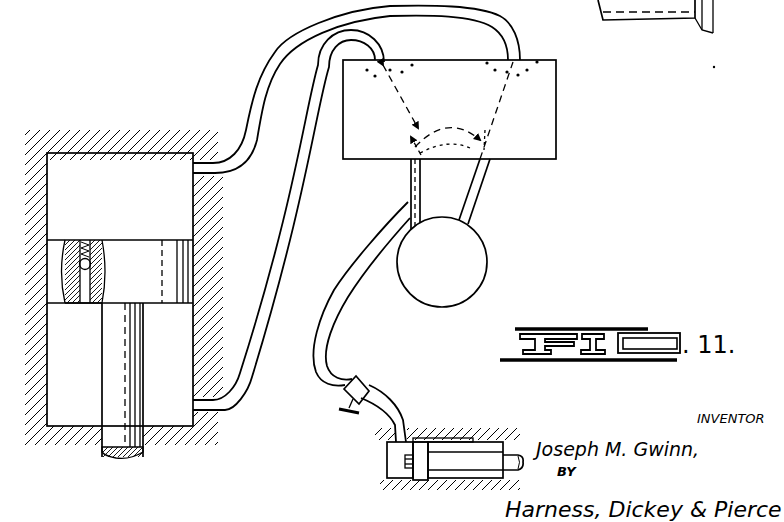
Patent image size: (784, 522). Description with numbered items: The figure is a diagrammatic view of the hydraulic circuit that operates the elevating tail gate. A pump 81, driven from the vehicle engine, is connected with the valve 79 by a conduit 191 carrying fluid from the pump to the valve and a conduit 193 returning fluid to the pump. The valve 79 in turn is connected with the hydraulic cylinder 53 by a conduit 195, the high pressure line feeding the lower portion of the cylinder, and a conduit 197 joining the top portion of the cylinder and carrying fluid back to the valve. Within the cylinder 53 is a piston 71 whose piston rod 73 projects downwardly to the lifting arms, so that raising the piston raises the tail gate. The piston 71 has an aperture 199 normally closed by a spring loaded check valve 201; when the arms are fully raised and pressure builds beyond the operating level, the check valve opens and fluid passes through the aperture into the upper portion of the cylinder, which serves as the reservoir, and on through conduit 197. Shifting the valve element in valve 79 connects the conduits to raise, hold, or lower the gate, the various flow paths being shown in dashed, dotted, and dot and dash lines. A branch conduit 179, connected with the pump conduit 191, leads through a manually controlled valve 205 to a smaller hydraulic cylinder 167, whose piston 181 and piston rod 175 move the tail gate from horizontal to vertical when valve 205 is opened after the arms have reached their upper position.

The hydraulic cylinder 53 is at (54, 147).
The piston 71 is at (68, 242).
The piston rod 73 is at (100, 455).
The valve 79 is at (557, 104).
The pump 81 is at (478, 260).
The hydraulic cylinder 167 is at (460, 440).
The piston rod 175 is at (445, 440).
The conduit 179 is at (395, 404).
The piston 181 is at (422, 478).
The conduit 191 is at (410, 191).
The conduit 193 is at (480, 192).
The conduit 195 is at (232, 397).
The conduit 197 is at (252, 108).
The aperture 199 is at (85, 304).
The spring loaded check valve 201 is at (95, 242).
The manually controlled valve 205 is at (361, 375).